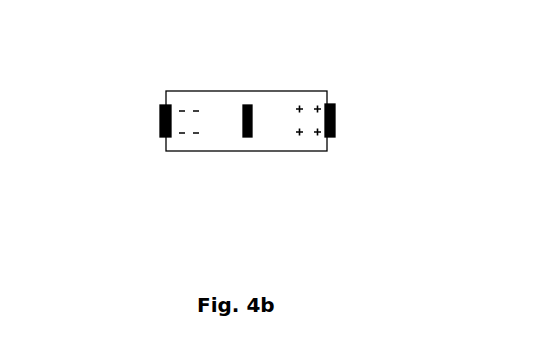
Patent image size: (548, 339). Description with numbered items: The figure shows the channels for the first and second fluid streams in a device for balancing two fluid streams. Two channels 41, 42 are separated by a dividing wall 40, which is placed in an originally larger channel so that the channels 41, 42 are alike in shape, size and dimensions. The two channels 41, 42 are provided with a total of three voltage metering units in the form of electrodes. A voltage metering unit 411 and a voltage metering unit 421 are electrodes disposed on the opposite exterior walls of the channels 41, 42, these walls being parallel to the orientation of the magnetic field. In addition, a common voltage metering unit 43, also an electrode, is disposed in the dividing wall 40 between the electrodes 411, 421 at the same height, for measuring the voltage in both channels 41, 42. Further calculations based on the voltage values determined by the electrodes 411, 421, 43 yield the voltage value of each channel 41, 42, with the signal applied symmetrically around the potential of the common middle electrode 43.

The dividing wall 40 is at (247, 107).
The common voltage metering unit 43 is at (252, 108).
The channel 41 is at (232, 137).
The channel 42 is at (267, 135).
The voltage metering unit 411 is at (160, 120).
The voltage metering unit 421 is at (335, 120).